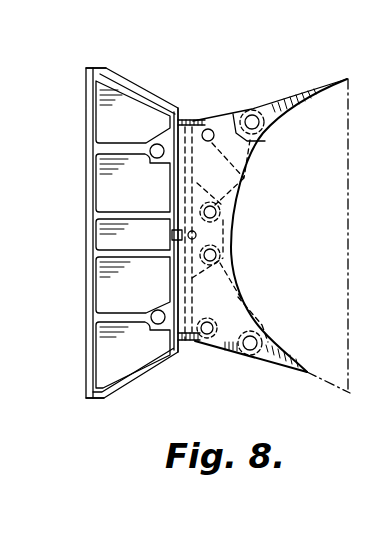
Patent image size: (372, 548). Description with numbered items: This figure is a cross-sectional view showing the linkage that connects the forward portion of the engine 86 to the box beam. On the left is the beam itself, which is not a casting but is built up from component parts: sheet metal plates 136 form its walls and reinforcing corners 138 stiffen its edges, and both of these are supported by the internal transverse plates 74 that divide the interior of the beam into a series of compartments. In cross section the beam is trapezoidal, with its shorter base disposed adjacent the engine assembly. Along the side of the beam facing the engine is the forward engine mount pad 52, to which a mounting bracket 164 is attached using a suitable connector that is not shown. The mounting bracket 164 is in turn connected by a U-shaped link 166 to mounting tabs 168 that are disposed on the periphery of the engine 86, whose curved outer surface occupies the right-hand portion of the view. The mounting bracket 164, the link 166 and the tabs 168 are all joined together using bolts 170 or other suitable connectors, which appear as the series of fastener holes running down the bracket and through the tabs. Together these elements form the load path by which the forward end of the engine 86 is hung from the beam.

The sheet metal plates 136 is at (140, 88).
The reinforcing corners 138 is at (103, 68).
The internal transverse plates 74 is at (97, 135).
The forward engine mount pad 52 is at (182, 110).
The mounting bracket 164 is at (190, 123).
The engine 86 is at (330, 243).
The mounting tabs 168 is at (244, 160).
The U-shaped link 166 is at (240, 112).
The bolts 170 is at (210, 133).